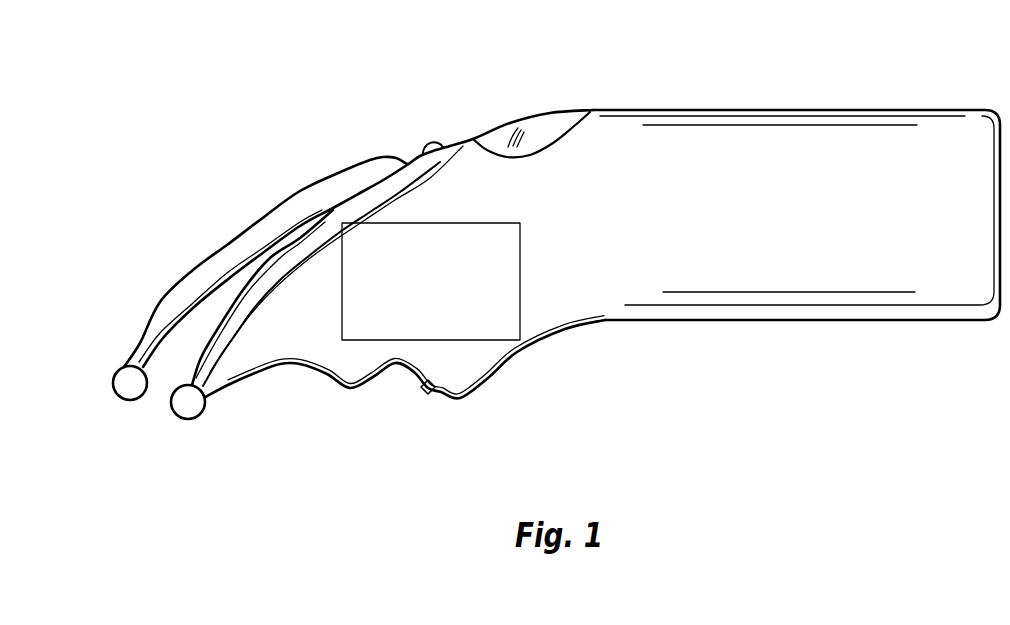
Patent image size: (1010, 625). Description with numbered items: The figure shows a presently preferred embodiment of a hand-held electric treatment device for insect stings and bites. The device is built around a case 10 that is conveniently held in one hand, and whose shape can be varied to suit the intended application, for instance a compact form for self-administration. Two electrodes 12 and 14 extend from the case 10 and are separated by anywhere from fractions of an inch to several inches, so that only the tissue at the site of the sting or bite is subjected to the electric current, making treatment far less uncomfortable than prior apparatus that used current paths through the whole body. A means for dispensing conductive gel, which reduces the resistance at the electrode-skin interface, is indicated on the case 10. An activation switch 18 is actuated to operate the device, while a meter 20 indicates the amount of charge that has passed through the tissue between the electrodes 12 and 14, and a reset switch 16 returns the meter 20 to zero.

The case 10 is at (821, 109).
The electrode 12 is at (119, 398).
The electrode 14 is at (182, 420).
The reset switch 16 is at (421, 389).
The activation switch 18 is at (425, 145).
The meter 20 is at (562, 117).